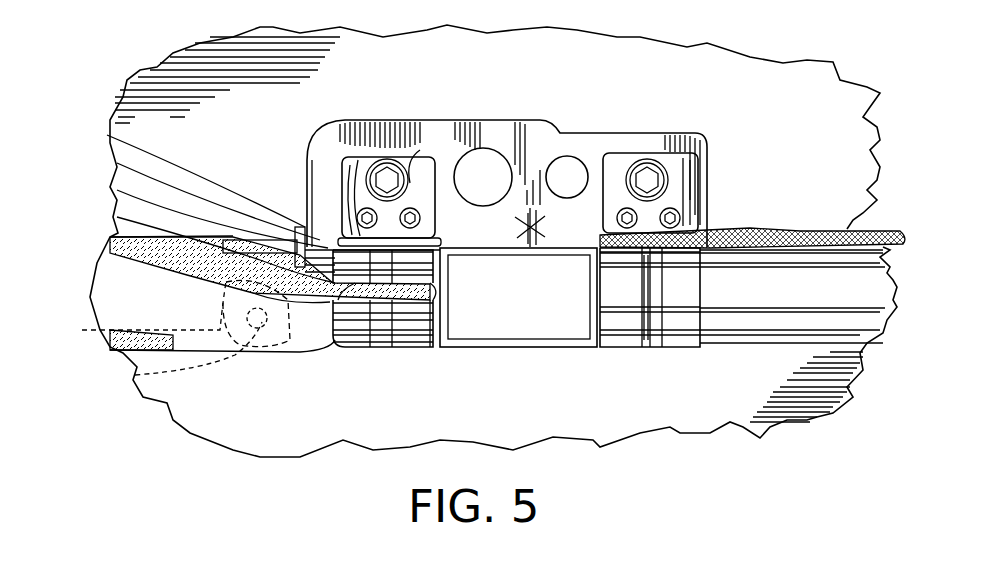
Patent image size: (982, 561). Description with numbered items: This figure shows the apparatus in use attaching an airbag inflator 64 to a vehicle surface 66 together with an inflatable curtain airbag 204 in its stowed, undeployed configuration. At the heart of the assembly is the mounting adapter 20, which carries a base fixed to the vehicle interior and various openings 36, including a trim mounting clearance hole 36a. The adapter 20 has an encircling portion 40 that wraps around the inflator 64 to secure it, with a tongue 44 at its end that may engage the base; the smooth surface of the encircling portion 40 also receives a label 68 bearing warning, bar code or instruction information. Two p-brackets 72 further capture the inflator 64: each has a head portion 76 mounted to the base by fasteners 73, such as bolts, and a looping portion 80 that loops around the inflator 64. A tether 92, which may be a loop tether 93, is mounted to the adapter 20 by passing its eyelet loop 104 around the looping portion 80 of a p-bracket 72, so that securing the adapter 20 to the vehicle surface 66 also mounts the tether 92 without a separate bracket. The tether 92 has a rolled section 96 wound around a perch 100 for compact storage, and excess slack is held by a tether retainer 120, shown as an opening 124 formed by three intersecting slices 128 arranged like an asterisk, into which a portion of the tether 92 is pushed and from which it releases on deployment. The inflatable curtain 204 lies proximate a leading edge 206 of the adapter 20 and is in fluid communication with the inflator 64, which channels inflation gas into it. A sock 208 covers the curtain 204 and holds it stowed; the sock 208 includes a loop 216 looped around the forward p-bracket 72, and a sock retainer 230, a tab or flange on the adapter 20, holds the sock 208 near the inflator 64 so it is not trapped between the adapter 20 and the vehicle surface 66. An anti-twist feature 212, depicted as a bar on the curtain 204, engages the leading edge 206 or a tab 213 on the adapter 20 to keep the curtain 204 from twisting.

The mounting adapter 20 is at (692, 131).
The openings 36 is at (484, 150).
The trim mounting clearance hole 36a is at (585, 162).
The encircling portion 40 is at (610, 300).
The tongue 44 is at (410, 175).
The airbag inflator 64 is at (308, 195).
The vehicle surface 66 is at (619, 73).
The label 68 is at (517, 310).
The p-bracket 72 is at (353, 170).
The fasteners 73 is at (383, 167).
The head portion 76 is at (355, 197).
The looping portion 80 is at (410, 318).
The tether 92 is at (283, 330).
The loop tether 93 is at (117, 217).
The rolled section 96 is at (137, 314).
The perch 100 is at (135, 375).
The eyelet loop 104 is at (651, 310).
The tether retainer 120 is at (537, 215).
The opening 124 is at (522, 226).
The slices 128 is at (526, 222).
The inflatable curtain airbag 204 is at (186, 309).
The leading edge 206 is at (107, 135).
The sock 208 is at (110, 237).
The anti-twist feature 212 is at (117, 190).
The tab 213 is at (117, 163).
The loop 216 is at (355, 300).
The sock retainer 230 is at (300, 240).